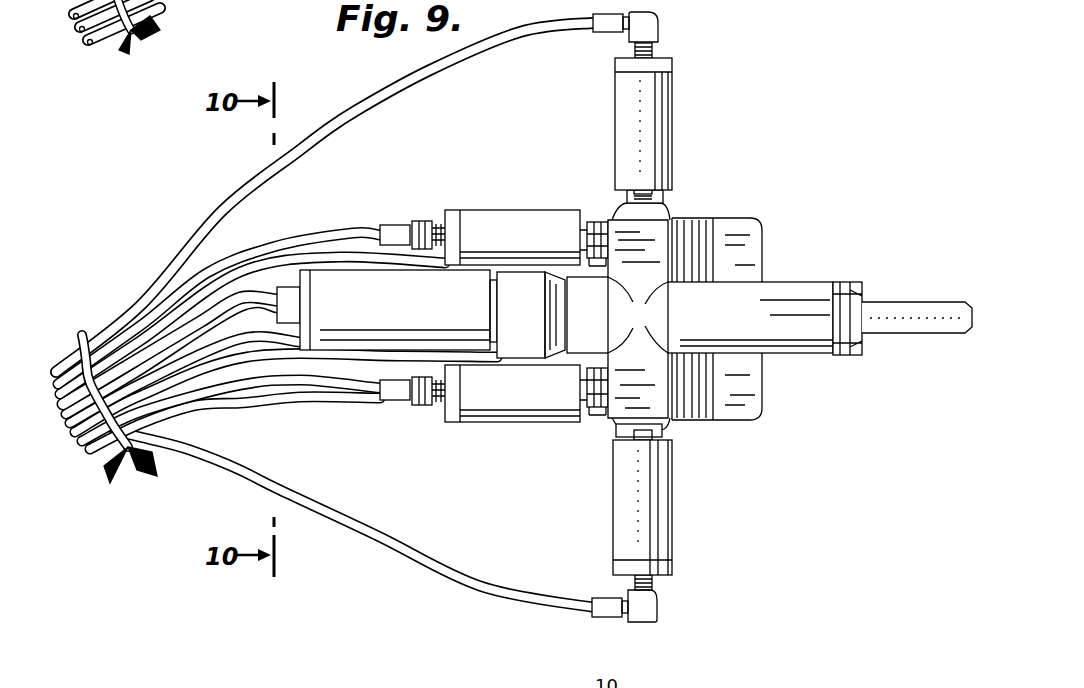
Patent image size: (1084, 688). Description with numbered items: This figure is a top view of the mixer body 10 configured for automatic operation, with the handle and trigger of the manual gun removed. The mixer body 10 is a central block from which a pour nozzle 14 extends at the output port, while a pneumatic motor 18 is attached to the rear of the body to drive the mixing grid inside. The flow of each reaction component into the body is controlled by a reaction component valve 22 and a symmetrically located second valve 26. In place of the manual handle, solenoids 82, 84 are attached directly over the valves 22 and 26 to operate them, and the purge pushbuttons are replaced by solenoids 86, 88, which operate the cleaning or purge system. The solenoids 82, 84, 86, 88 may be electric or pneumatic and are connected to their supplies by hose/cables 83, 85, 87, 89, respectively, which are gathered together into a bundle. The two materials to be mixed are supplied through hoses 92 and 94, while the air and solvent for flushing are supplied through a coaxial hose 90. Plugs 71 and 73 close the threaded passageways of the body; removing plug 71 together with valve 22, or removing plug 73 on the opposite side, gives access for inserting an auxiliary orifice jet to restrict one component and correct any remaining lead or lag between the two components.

The mixer body 10 is at (770, 242).
The pour nozzle 14 is at (883, 306).
The pneumatic motor 18 is at (410, 303).
The reaction component valve 22 is at (590, 416).
The second valve 26 is at (595, 222).
The plug 71 is at (662, 432).
The plug 73 is at (660, 200).
The solenoid 82 is at (508, 423).
The hose/cable 83 is at (195, 410).
The solenoid 84 is at (508, 213).
The hose/cable 85 is at (352, 228).
The solenoid 86 is at (673, 520).
The hose/cable 87 is at (365, 545).
The solenoid 88 is at (673, 112).
The hose/cable 89 is at (221, 211).
The coaxial hose 90 is at (247, 352).
The hose 92 is at (420, 408).
The hose 94 is at (278, 282).